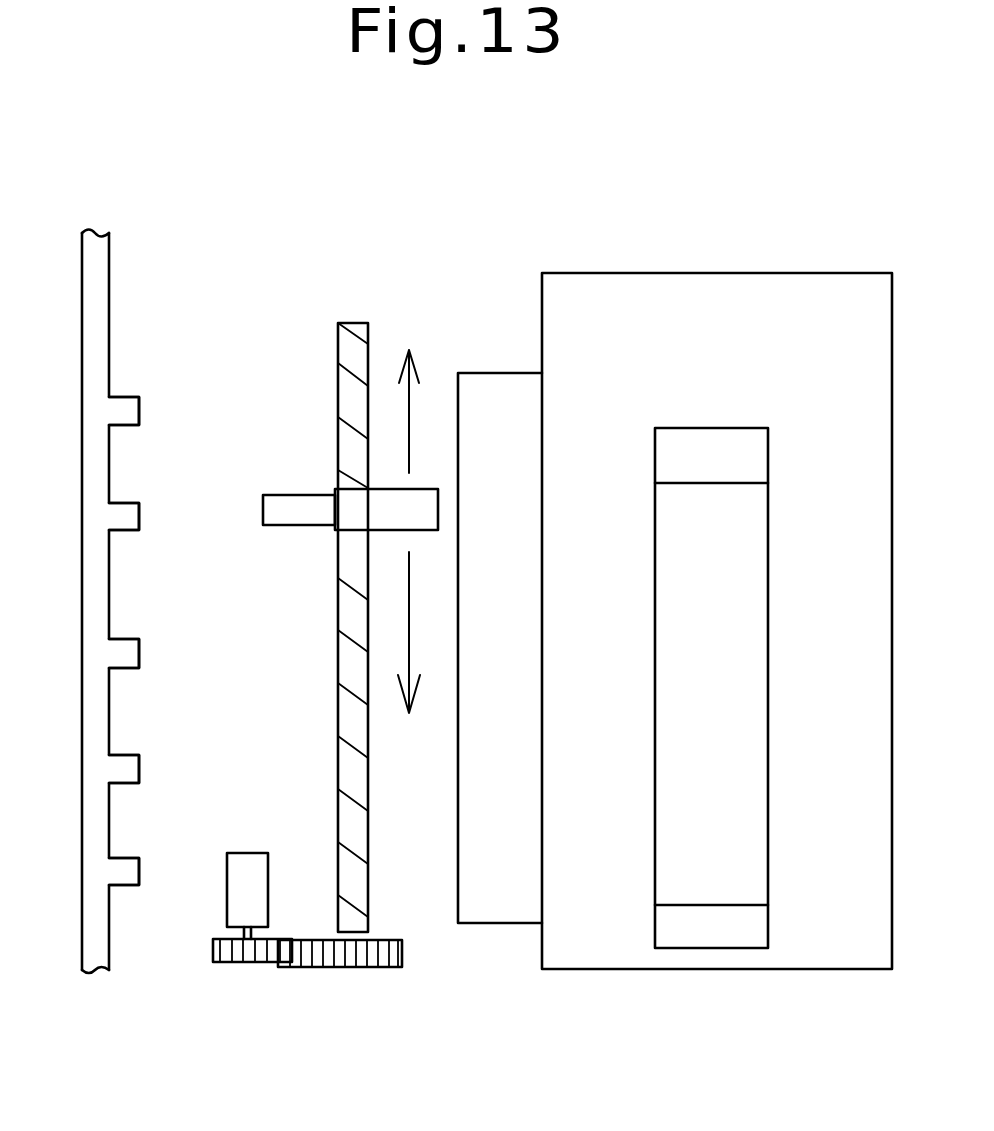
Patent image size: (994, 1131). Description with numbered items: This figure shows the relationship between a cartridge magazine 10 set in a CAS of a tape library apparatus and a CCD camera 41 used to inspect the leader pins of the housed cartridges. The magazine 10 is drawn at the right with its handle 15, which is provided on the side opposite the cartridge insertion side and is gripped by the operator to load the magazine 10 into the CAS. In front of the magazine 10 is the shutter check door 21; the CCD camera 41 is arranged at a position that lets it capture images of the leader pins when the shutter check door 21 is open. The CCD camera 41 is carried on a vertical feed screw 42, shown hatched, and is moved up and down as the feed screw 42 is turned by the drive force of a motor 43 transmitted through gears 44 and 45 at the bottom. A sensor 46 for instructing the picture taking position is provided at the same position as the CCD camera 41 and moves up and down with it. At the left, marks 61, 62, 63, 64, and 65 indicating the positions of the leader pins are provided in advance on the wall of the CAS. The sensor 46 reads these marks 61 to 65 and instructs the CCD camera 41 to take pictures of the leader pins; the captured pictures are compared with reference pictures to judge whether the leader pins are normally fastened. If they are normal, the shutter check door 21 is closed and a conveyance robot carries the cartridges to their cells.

The cartridge magazine 10 is at (826, 243).
The handle 15 is at (742, 803).
The shutter check door 21 is at (498, 902).
The CCD camera 41 is at (400, 503).
The feed screw 42 is at (358, 322).
The motor 43 is at (253, 852).
The gear 44 is at (238, 963).
The gear 45 is at (345, 965).
The sensor 46 is at (293, 495).
The mark 61 is at (122, 395).
The mark 62 is at (122, 503).
The mark 63 is at (120, 638).
The mark 64 is at (120, 755).
The mark 65 is at (120, 857).